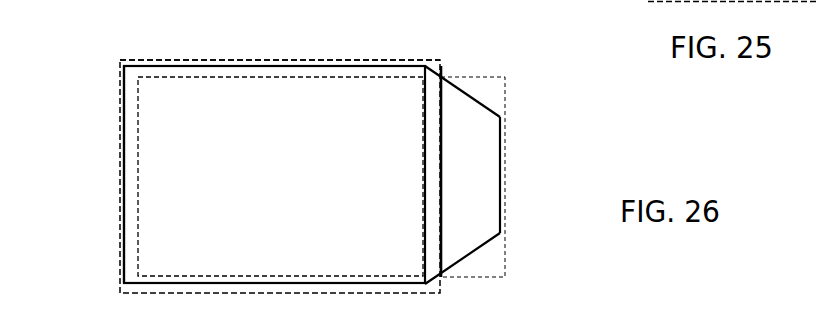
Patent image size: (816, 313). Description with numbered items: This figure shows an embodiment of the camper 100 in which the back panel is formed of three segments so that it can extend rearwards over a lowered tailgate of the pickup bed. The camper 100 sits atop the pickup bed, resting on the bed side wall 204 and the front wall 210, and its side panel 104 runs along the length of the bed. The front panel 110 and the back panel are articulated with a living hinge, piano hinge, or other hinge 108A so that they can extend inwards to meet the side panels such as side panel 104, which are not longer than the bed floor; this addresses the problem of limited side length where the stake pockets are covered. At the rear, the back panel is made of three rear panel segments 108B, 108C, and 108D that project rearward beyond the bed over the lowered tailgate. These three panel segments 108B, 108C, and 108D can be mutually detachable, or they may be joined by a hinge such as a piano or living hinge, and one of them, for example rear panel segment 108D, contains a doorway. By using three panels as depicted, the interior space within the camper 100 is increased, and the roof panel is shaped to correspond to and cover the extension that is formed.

The camper 100 is at (118, 66).
The bed side wall 204 is at (230, 59).
The side panel 104 is at (325, 64).
The front wall 210 is at (120, 103).
The front panel 110 is at (122, 240).
The hinge 108A is at (425, 172).
The rear panel segment 108B is at (468, 94).
The rear panel segment 108C is at (478, 250).
The rear panel segment 108D is at (503, 172).